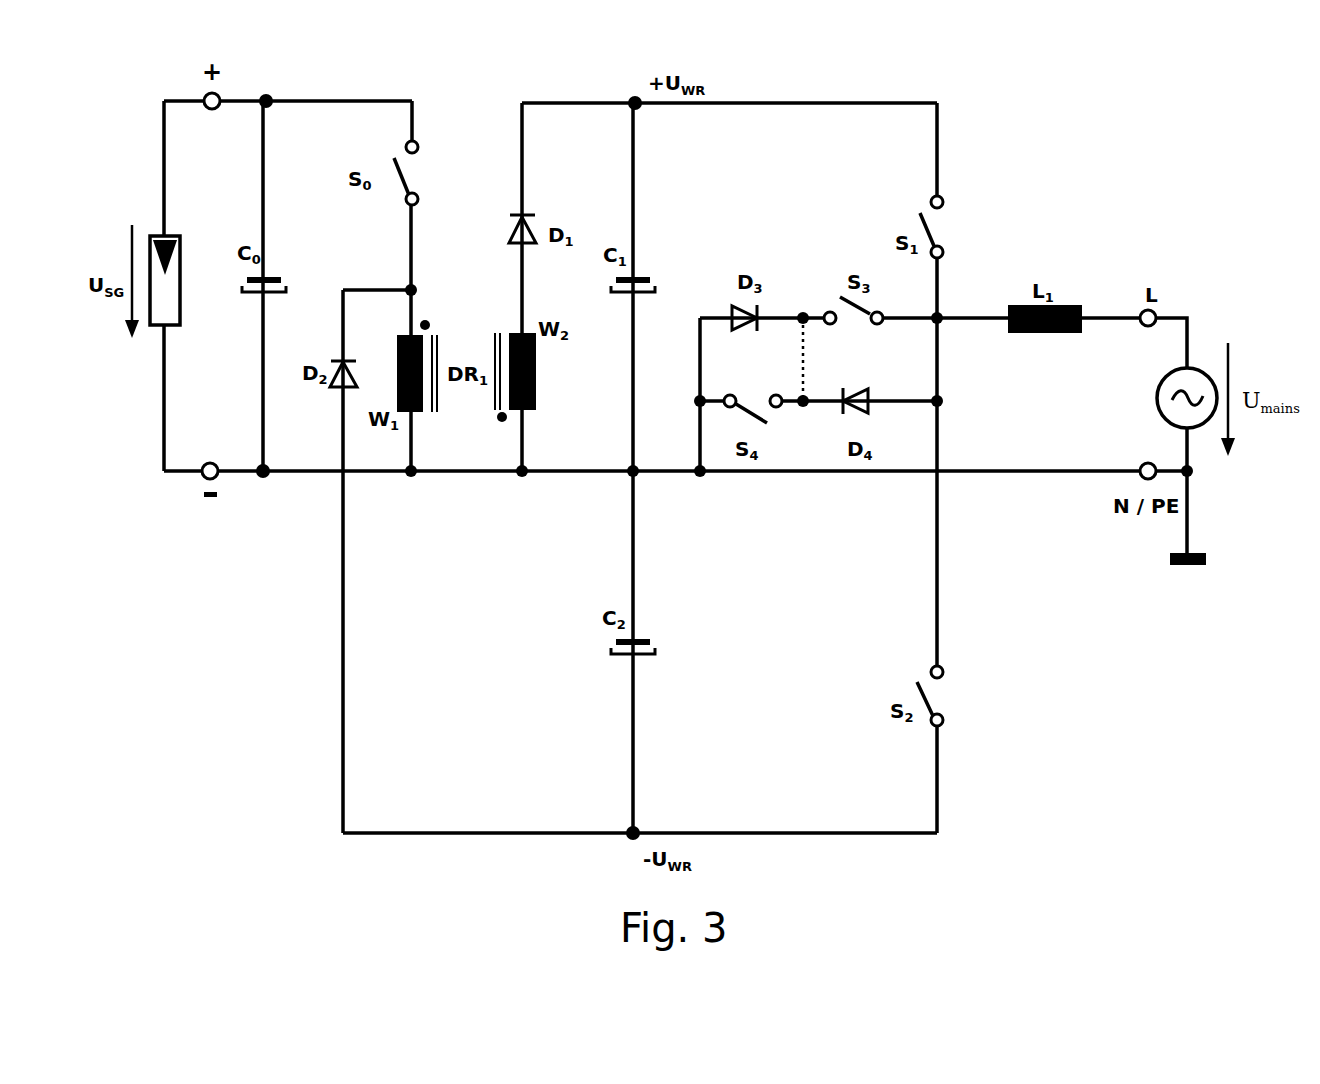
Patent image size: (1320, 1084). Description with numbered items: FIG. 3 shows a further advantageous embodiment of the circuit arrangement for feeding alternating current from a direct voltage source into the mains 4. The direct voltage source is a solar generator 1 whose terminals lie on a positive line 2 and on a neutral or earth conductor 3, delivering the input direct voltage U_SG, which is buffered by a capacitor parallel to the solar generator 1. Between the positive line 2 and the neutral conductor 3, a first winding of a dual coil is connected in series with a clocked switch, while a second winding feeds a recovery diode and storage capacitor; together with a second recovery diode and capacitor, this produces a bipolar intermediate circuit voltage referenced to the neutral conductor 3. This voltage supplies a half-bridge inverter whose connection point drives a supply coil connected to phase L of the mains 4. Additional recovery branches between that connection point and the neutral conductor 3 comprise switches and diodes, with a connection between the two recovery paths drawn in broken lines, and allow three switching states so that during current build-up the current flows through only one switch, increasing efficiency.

The solar generator 1 is at (186, 280).
The positive line 2 is at (282, 93).
The neutral or earth conductor 3 is at (272, 483).
The mains 4 is at (1153, 405).